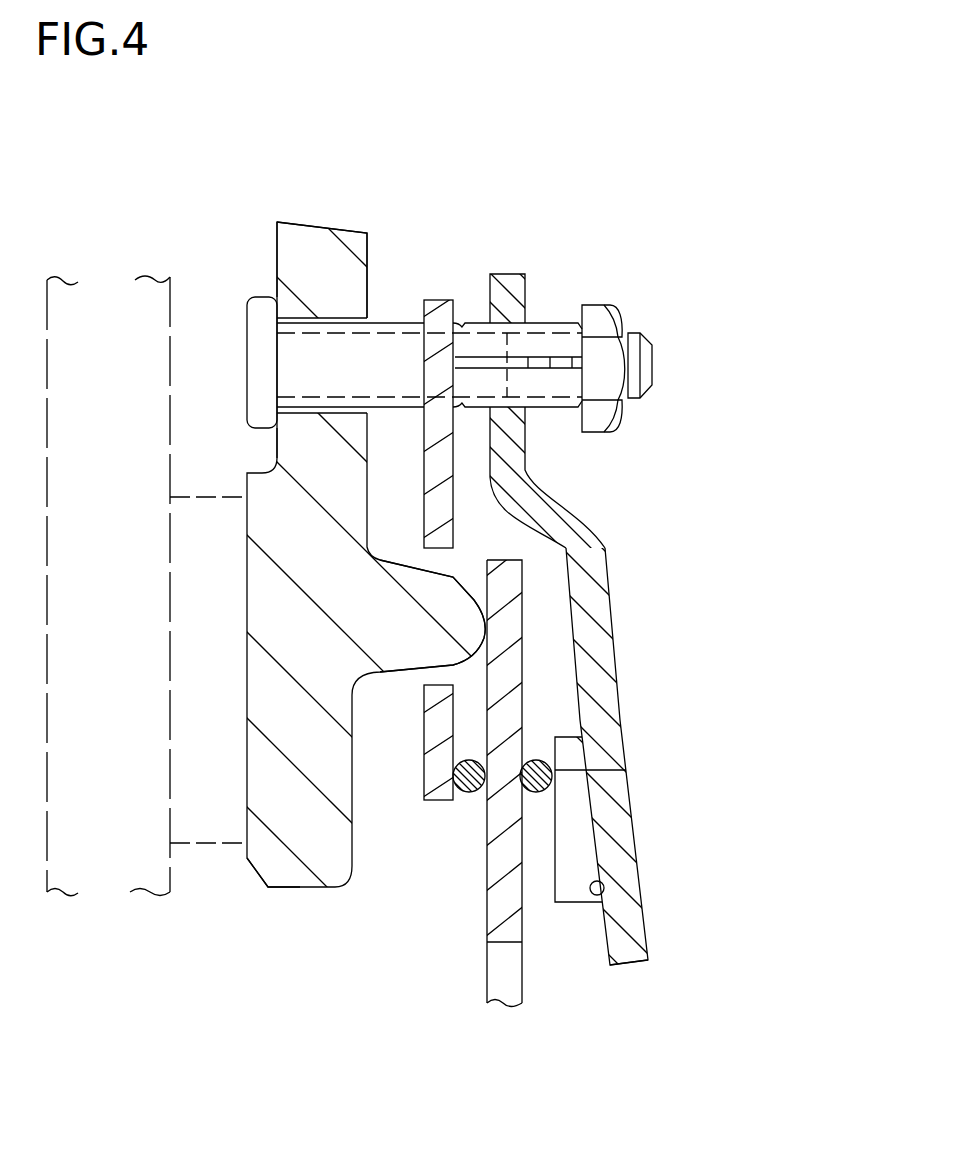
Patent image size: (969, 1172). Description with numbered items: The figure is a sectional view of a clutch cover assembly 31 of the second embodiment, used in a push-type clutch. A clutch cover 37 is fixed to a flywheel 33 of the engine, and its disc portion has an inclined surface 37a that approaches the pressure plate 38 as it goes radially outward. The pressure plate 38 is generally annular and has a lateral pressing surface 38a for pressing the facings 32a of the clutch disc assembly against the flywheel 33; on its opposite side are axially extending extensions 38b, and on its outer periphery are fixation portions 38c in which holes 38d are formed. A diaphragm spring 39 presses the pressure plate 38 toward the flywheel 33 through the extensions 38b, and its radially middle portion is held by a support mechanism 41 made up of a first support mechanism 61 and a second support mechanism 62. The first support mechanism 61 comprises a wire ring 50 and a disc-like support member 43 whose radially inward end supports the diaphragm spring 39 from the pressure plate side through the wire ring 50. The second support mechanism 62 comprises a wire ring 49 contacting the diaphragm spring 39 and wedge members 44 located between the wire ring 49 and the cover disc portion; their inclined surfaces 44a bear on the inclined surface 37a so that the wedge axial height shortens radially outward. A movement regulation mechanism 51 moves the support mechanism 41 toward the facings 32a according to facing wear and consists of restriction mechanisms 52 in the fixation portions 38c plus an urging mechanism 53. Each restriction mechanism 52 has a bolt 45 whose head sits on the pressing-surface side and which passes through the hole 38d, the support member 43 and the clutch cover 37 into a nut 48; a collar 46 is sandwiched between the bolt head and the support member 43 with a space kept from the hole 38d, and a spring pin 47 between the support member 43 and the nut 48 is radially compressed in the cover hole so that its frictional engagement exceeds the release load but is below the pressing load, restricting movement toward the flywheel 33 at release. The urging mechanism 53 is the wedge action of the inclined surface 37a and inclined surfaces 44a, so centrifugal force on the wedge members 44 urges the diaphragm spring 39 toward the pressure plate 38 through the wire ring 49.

The clutch cover assembly 31 is at (725, 910).
The facings 32a is at (180, 843).
The flywheel 33 is at (43, 892).
The clutch cover 37 is at (592, 620).
The inclined surface 37a is at (603, 893).
The pressure plate 38 is at (332, 856).
The pressing surface 38a is at (240, 853).
The extensions 38b is at (465, 625).
The fixation portions 38c is at (293, 268).
The hole 38d is at (316, 321).
The diaphragm spring 39 is at (520, 965).
The support mechanism 41 is at (461, 938).
The support member 43 is at (430, 417).
The wedge members 44 is at (573, 890).
The inclined surfaces 44a is at (602, 867).
The bolt 45 is at (262, 372).
The collar 46 is at (390, 323).
The spring pin 47 is at (543, 409).
The nut 48 is at (603, 417).
The wire ring 49 is at (662, 752).
The wire ring 50 is at (468, 760).
The movement regulation mechanism 51 is at (765, 355).
The restriction mechanism 52 is at (673, 365).
The urging mechanism 53 is at (613, 834).
The first support mechanism 61 is at (442, 836).
The second support mechanism 62 is at (530, 836).